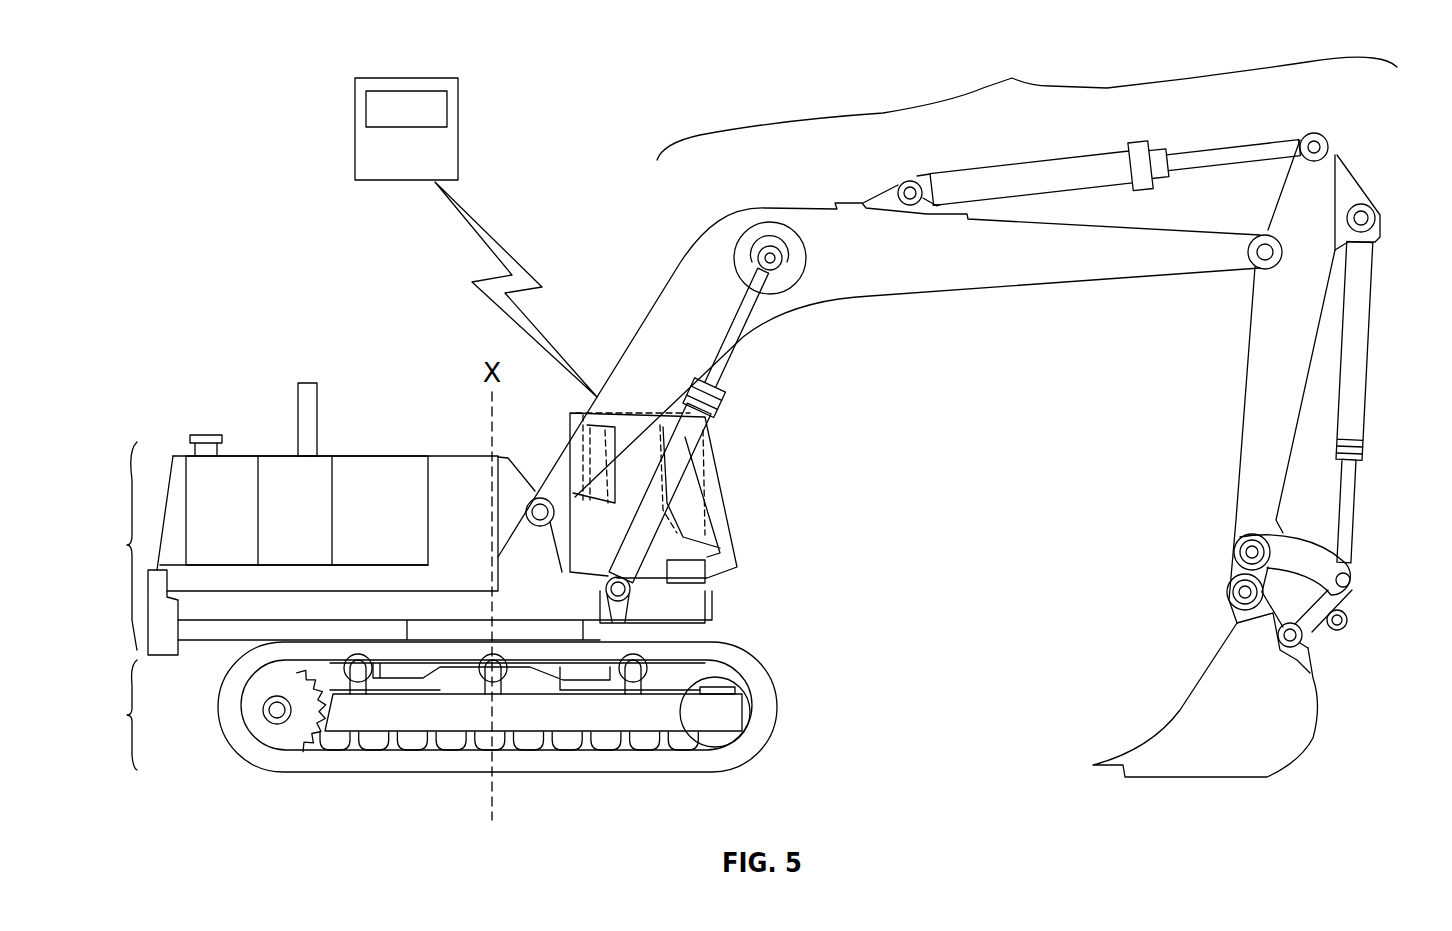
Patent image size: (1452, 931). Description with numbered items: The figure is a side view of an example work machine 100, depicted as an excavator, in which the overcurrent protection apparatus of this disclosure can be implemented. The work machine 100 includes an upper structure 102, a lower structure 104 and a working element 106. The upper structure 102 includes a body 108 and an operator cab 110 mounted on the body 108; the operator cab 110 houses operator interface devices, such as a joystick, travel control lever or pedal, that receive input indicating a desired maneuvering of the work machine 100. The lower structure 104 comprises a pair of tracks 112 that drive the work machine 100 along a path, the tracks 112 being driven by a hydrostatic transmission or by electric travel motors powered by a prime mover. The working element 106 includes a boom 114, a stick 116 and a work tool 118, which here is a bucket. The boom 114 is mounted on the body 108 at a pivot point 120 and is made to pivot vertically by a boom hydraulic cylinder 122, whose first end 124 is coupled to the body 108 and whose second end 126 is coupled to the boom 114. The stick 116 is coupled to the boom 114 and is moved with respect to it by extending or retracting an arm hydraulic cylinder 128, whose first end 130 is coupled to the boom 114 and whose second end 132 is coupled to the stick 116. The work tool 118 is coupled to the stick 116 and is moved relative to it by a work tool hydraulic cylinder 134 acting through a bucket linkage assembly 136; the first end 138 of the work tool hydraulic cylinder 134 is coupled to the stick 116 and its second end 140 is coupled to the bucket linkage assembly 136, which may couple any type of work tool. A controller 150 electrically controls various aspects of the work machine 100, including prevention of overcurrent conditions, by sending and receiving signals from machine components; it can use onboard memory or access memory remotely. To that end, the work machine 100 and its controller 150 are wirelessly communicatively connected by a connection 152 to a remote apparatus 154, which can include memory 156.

The work machine 100 is at (384, 165).
The upper structure 102 is at (110, 546).
The lower structure 104 is at (110, 715).
The working element 106 is at (1027, 102).
The body 108 is at (375, 456).
The operator cab 110 is at (728, 525).
The pair of tracks 112 is at (227, 742).
The boom 114 is at (967, 295).
The stick 116 is at (1238, 460).
The work tool 118 is at (1188, 705).
The pivot point 120 is at (544, 503).
The boom hydraulic cylinder 122 is at (712, 437).
The first end of the boom hydraulic cylinder 124 is at (632, 596).
The second end of the boom hydraulic cylinder 126 is at (788, 270).
The arm hydraulic cylinder 128 is at (1040, 170).
The first end of the arm hydraulic cylinder 130 is at (903, 182).
The second end of the arm hydraulic cylinder 132 is at (1318, 133).
The work tool hydraulic cylinder 134 is at (1375, 315).
The bucket linkage assembly 136 is at (1335, 600).
The first end of the work tool hydraulic cylinder 138 is at (1372, 207).
The second end of the work tool hydraulic cylinder 140 is at (1350, 536).
The controller 150 is at (745, 570).
The connection 152 is at (470, 283).
The remote apparatus 154 is at (462, 132).
The memory 156 is at (396, 91).